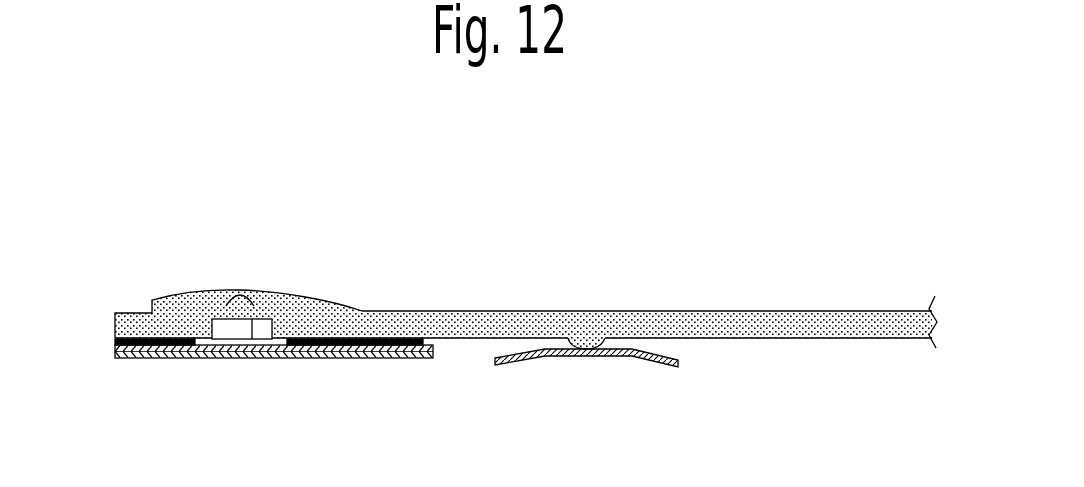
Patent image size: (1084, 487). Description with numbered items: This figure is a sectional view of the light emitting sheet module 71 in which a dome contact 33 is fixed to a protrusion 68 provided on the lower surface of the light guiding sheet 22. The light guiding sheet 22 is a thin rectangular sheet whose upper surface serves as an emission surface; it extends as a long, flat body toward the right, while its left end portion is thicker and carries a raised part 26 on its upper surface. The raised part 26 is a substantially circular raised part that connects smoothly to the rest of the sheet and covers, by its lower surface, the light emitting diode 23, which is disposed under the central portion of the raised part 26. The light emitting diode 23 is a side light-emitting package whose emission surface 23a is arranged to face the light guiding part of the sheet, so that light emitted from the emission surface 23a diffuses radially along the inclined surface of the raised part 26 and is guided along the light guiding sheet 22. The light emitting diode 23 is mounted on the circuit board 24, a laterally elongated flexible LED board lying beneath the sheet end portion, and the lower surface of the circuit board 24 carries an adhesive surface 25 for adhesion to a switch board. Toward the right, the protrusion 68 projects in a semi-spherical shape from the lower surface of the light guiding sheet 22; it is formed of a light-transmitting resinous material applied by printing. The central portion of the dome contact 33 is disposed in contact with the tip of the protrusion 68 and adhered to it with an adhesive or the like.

The light emitting sheet module 71 is at (504, 279).
The light guiding sheet 22 is at (847, 308).
The raised part 26 is at (347, 295).
The light emitting diode 23 is at (223, 322).
The emission surface 23a is at (268, 322).
The circuit board 24 is at (117, 343).
The adhesive surface 25 is at (178, 358).
The protrusion 68 is at (605, 352).
The dome contact 33 is at (650, 364).